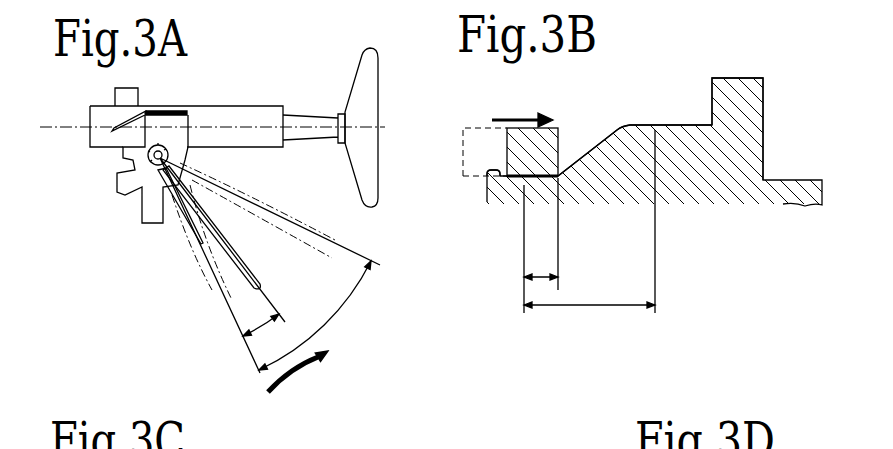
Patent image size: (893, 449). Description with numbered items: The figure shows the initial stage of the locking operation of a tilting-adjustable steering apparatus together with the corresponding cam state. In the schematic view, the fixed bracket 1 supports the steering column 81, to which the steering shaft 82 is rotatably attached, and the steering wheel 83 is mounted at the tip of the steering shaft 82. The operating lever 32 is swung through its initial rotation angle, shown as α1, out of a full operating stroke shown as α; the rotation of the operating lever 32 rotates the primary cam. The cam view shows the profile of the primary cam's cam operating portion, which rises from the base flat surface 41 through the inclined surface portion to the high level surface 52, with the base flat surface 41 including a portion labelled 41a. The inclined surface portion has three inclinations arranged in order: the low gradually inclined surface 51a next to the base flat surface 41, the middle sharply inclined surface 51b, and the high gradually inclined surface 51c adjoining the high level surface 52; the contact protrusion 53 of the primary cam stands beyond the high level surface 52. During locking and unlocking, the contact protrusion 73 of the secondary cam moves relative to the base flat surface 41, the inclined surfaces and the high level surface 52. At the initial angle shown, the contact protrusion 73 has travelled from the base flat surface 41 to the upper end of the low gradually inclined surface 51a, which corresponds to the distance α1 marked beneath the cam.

In FIG. 3A, the fixed bracket 1 is at (124, 187).
In FIG. 3A, the operating lever 32 is at (234, 263).
In FIG. 3A, the steering column 81 is at (245, 115).
In FIG. 3A, the steering shaft 82 is at (307, 137).
In FIG. 3A, the steering wheel 83 is at (368, 70).
In FIG. 3B, the base flat surface 41 is at (797, 180).
In FIG. 3B, the engagement portion of base member 41a is at (487, 173).
In FIG. 3B, the low gradually inclined surface 51a is at (533, 172).
In FIG. 3B, the middle sharply inclined surface 51b is at (600, 144).
In FIG. 3B, the high gradually inclined surface 51c is at (638, 126).
In FIG. 3B, the high level surface 52 is at (685, 126).
In FIG. 3B, the contact protrusion 53 is at (742, 78).
In FIG. 3B, the contact protrusion 73 is at (560, 138).